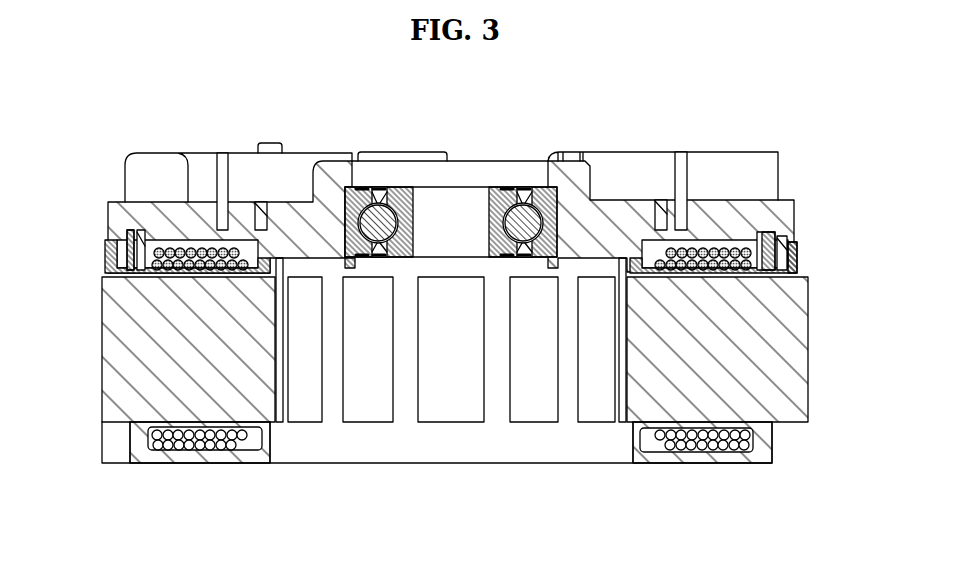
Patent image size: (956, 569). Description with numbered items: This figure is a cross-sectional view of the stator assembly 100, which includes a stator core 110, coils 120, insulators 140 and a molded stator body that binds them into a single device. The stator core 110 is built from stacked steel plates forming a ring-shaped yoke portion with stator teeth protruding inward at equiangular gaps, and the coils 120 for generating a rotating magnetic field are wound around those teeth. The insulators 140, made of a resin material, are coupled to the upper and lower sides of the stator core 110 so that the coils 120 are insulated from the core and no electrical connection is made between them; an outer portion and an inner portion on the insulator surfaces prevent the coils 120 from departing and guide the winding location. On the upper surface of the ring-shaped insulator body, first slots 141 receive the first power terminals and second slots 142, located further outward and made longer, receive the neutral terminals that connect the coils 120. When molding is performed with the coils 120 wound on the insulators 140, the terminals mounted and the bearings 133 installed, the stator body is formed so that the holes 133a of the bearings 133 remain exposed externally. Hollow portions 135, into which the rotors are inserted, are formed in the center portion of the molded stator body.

The stator assembly 100 is at (152, 342).
The stator core 110 is at (794, 331).
The coils 120 is at (728, 250).
The bearings 133 is at (503, 205).
The holes 133a is at (418, 212).
The hollow portions 135 is at (568, 443).
The insulators 140 is at (797, 248).
The first slots 141 is at (777, 236).
The second slots 142 is at (788, 246).